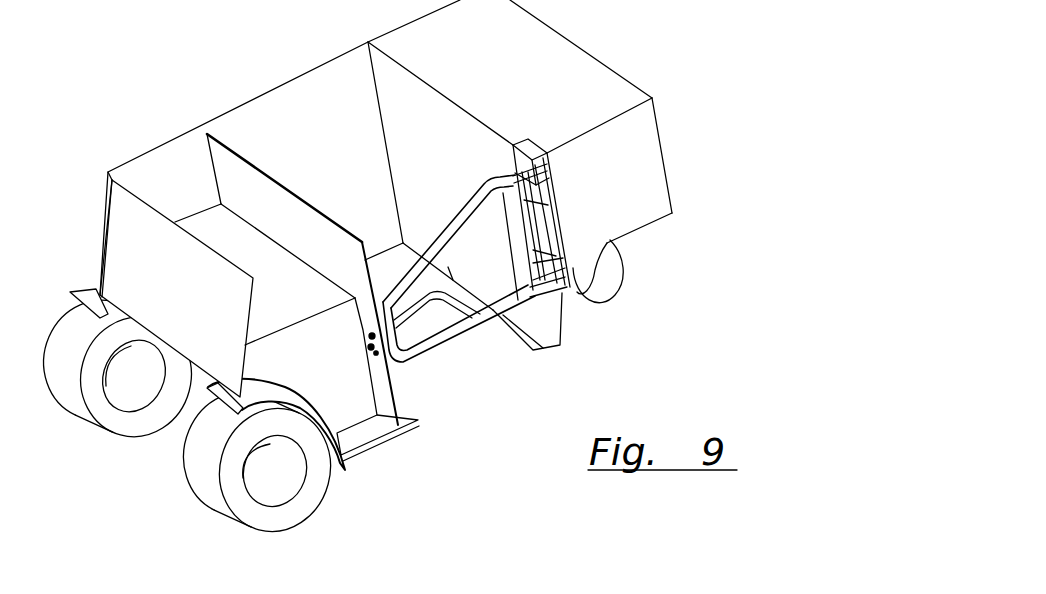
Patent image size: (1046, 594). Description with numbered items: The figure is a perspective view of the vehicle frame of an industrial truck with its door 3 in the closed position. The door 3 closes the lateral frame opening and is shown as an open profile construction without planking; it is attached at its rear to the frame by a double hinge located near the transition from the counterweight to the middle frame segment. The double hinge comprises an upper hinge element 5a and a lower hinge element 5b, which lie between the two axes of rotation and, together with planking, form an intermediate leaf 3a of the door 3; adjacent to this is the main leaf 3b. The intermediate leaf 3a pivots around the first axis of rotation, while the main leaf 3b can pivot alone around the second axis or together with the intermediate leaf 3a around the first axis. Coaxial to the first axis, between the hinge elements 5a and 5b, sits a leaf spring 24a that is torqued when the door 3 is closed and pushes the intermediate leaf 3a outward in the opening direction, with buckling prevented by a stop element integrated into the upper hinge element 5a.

The door 3 is at (474, 400).
The intermediate leaf 3a is at (514, 112).
The main leaf 3b is at (428, 207).
The upper hinge element 5a is at (572, 167).
The lower hinge element 5b is at (584, 315).
The leaf spring 24a is at (558, 208).